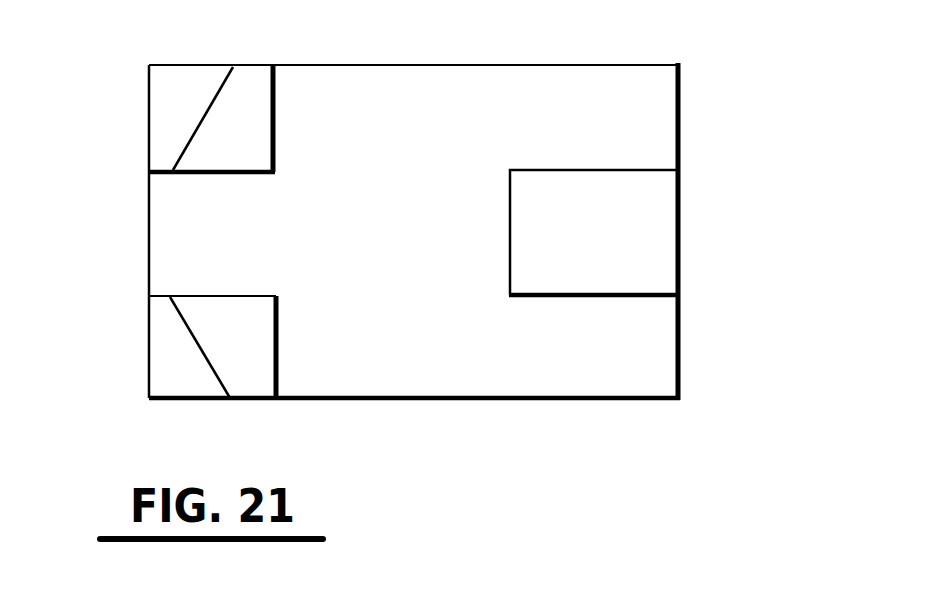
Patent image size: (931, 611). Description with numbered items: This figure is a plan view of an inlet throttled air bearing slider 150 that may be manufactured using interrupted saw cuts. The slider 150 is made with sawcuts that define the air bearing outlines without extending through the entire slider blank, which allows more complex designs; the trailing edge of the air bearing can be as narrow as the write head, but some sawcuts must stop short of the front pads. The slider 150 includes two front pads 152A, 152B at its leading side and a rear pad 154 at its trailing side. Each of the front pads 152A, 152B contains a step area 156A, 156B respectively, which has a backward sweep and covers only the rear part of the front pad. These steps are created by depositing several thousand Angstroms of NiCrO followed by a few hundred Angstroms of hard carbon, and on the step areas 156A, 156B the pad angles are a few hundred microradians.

The slider 150 is at (512, 62).
The front pad 152A is at (167, 102).
The front pad 152B is at (165, 325).
The rear pad 154 is at (660, 222).
The step area 156A is at (262, 82).
The step area 156B is at (254, 378).